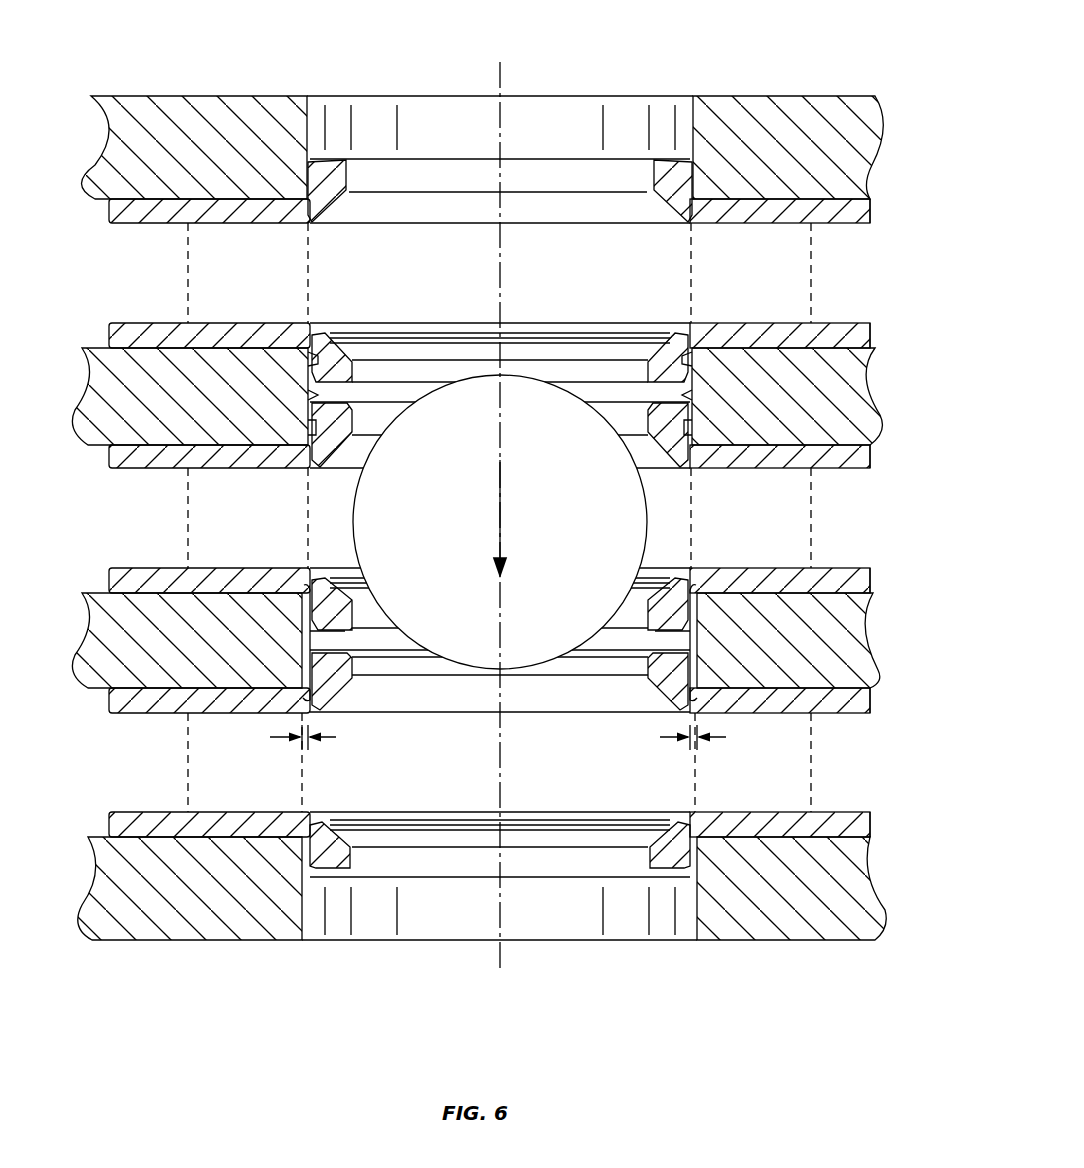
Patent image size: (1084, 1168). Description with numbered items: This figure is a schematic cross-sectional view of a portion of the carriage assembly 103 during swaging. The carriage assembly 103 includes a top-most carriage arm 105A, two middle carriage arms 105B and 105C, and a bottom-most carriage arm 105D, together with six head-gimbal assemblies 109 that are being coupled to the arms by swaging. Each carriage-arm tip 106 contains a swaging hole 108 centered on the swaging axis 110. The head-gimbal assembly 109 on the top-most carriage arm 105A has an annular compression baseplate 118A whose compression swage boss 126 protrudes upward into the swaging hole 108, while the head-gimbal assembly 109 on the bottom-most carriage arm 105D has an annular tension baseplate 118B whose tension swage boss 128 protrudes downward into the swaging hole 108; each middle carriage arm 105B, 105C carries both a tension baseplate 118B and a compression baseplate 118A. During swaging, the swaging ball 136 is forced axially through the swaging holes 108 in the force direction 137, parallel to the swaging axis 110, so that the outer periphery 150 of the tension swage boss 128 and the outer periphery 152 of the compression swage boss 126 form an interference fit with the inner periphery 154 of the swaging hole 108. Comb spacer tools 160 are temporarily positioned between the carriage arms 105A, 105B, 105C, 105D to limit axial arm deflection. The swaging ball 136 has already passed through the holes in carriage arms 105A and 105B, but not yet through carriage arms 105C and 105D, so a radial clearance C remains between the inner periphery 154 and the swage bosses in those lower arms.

The carriage assembly 103 is at (145, 48).
The top-most carriage arm 105A is at (90, 126).
The middle carriage arm 105B is at (82, 368).
The middle carriage arm 105C is at (80, 617).
The bottom-most carriage arm 105D is at (90, 907).
The carriage-arm tip 106 is at (262, 122).
The swaging hole 108 is at (417, 124).
The head-gimbal assembly 109 is at (878, 209).
The swaging axis 110 is at (500, 78).
The compression baseplate 118A is at (845, 222).
The tension baseplate 118B is at (852, 333).
The compression swage boss 126 is at (665, 175).
The tension swage boss 128 is at (662, 365).
The swaging ball 136 is at (632, 492).
The force direction 137 is at (505, 514).
The outer periphery of the tension swage boss 150 is at (305, 360).
The outer periphery of the compression swage boss 152 is at (308, 428).
The inner periphery of the swaging hole 154 is at (308, 398).
The comb spacer tool 160 is at (800, 288).
The radial clearance C is at (508, 737).